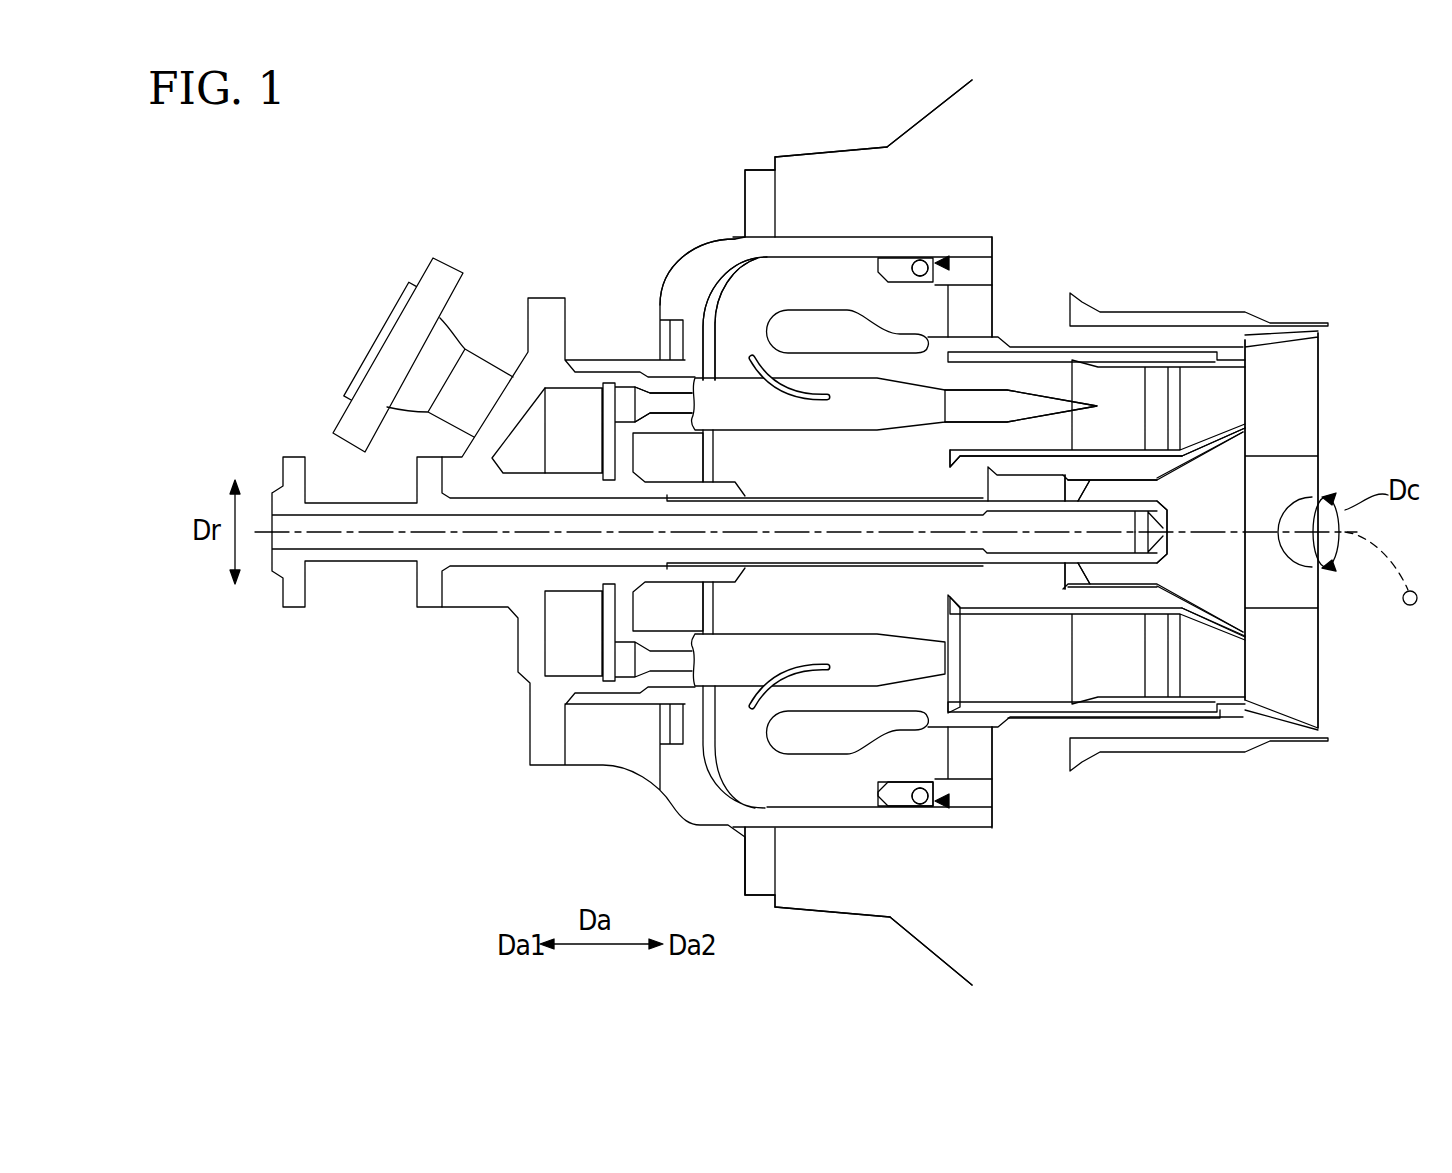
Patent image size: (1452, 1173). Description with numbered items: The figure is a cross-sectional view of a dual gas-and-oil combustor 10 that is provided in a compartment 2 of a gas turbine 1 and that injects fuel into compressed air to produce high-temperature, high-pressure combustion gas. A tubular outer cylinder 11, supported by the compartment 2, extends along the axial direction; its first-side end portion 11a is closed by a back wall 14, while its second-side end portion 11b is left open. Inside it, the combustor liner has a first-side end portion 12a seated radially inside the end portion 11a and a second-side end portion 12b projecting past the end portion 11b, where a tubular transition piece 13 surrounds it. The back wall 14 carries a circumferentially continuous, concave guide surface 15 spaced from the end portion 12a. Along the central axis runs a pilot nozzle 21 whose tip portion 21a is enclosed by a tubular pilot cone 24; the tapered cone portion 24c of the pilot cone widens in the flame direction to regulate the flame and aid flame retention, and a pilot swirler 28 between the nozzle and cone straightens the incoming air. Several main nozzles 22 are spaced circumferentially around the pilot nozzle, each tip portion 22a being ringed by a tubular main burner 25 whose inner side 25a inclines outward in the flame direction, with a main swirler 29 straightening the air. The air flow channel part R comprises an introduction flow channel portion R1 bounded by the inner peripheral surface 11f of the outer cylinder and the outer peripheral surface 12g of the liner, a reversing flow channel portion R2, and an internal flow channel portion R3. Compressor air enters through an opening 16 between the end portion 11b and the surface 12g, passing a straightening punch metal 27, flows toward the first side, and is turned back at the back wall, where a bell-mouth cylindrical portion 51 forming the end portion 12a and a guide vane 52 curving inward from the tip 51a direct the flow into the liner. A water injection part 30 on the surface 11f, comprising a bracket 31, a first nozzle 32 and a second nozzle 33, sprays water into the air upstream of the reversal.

The gas turbine 1 is at (490, 178).
The compartment 2 is at (913, 118).
The combustor 10 is at (682, 225).
The outer cylinder 11 is at (832, 268).
The end portion of the outer cylinder 11a is at (790, 262).
The end portion of the outer cylinder 11b is at (985, 238).
The inner peripheral surface 11f is at (818, 265).
The end portion of the combustor liner 12a is at (770, 330).
The end portion of the combustor liner 12b is at (1243, 327).
The outer peripheral surface 12g is at (1157, 345).
The transition piece 13 is at (1198, 310).
The back wall 14 is at (668, 262).
The guide surface 15 is at (760, 257).
The opening 16 is at (990, 240).
The pilot nozzle 21 is at (868, 496).
The tip portion 21a is at (1190, 488).
The main nozzle 22 is at (870, 430).
The tip portion 22a is at (1082, 393).
The pilot cone 24 is at (1248, 607).
The tapered cone portion 24c is at (1228, 453).
The main burner 25 is at (1152, 367).
The side of the main burner 25a is at (1228, 420).
The punch metal 27 is at (955, 262).
The pilot swirler 28 is at (1063, 572).
The main swirler 29 is at (1010, 460).
The water injection part 30 is at (966, 248).
The bracket 31 is at (866, 300).
The first nozzle 32 is at (905, 808).
The second nozzle 33 is at (948, 256).
The cylindrical portion 51 is at (828, 400).
The tip of the cylindrical portion 51a is at (757, 310).
The guide vane 52 is at (772, 398).
The air flow channel part R is at (853, 268).
The introduction flow channel portion R1 is at (962, 290).
The reversing flow channel portion R2 is at (773, 283).
The internal flow channel portion R3 is at (905, 370).